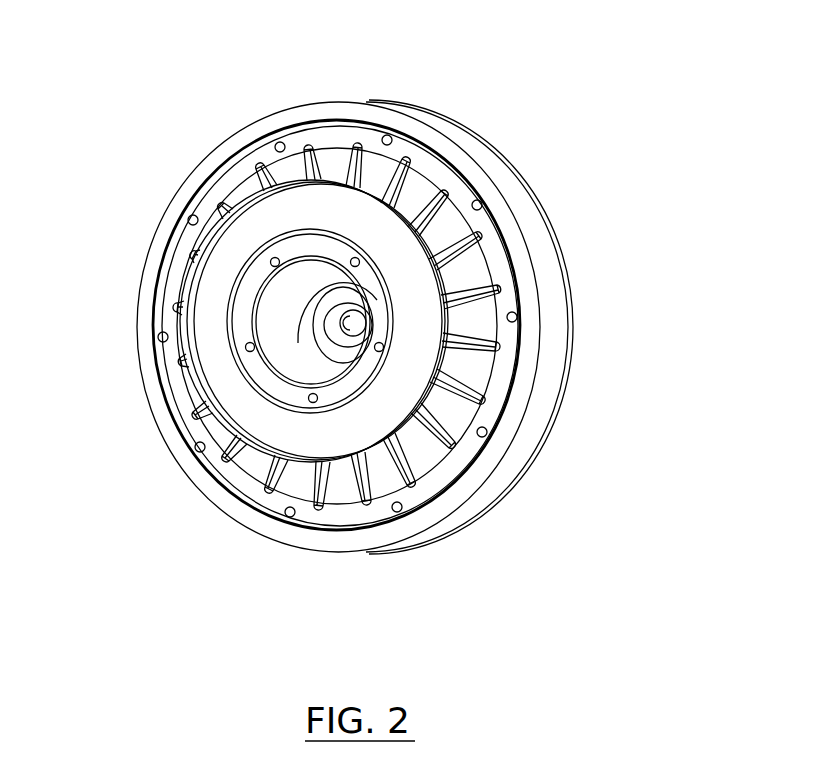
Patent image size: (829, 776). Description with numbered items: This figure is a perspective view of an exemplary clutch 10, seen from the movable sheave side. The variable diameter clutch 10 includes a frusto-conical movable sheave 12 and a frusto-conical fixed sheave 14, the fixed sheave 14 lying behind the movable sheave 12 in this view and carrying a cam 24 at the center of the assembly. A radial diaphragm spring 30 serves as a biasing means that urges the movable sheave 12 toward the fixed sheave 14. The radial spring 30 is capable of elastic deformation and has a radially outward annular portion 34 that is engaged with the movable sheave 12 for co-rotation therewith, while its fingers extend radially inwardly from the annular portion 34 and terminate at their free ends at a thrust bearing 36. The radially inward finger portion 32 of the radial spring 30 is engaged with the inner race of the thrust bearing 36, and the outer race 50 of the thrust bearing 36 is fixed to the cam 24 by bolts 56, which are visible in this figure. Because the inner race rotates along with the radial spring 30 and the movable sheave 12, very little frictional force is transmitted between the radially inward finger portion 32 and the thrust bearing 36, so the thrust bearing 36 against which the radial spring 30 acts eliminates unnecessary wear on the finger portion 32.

The clutch 10 is at (466, 57).
The movable sheave 12 is at (438, 132).
The fixed sheave 14 is at (546, 236).
The cam 24 is at (285, 290).
The radial diaphragm spring 30 is at (478, 310).
The radially inward finger portion 32 is at (483, 222).
The annular portion 34 is at (490, 240).
The thrust bearing 36 is at (208, 366).
The outer race 50 is at (253, 417).
The bolts 56 is at (383, 352).